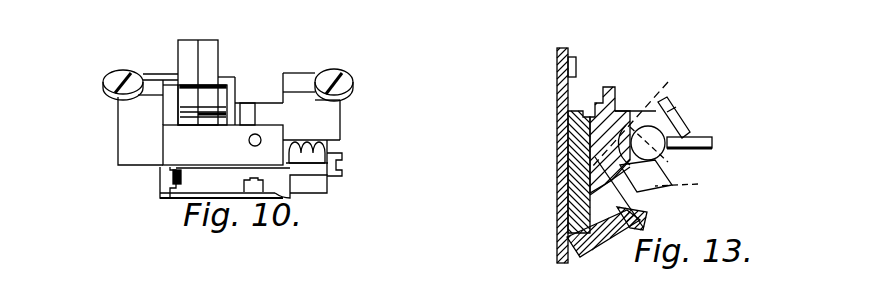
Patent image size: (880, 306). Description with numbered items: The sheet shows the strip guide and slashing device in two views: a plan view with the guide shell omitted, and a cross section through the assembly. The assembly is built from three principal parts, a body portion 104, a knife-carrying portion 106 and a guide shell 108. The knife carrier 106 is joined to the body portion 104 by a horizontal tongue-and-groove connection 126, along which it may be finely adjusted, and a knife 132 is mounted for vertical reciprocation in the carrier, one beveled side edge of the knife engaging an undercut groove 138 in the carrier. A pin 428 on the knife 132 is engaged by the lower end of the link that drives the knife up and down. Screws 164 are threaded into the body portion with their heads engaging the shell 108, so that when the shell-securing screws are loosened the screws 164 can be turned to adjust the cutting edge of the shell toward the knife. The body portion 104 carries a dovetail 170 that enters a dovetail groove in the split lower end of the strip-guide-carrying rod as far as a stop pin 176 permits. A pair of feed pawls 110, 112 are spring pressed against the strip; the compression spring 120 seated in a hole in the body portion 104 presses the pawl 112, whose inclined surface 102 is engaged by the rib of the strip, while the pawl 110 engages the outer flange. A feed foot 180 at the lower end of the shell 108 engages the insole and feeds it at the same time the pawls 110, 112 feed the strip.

In FIG. 10, the screws 164 is at (112, 75).
In FIG. 13, the screws 164 is at (670, 103).
In FIG. 10, the dovetail 170 is at (165, 150).
In FIG. 13, the dovetail 170 is at (584, 115).
In FIG. 10, the stop pin 176 is at (249, 141).
In FIG. 13, the stop pin 176 is at (618, 97).
In FIG. 10, the knife-carrying portion 106 is at (160, 190).
In FIG. 13, the knife-carrying portion 106 is at (572, 162).
In FIG. 10, the pin 428 is at (250, 173).
In FIG. 13, the pin 428 is at (580, 63).
In FIG. 10, the undercut groove 138 is at (182, 199).
In FIG. 10, the knife 132 is at (277, 196).
In FIG. 13, the knife 132 is at (558, 90).
In FIG. 13, the feed pawl 110 is at (587, 220).
In FIG. 13, the feed foot 180 is at (580, 262).
In FIG. 13, the guide shell 108 is at (645, 218).
In FIG. 13, the feed pawl 112 is at (665, 163).
In FIG. 13, the body portion 104 is at (675, 115).
In FIG. 13, the compression spring 120 is at (652, 114).
In FIG. 13, the inclined surface 102 is at (698, 189).
In FIG. 13, the tongue-and-groove connection 126 is at (592, 127).